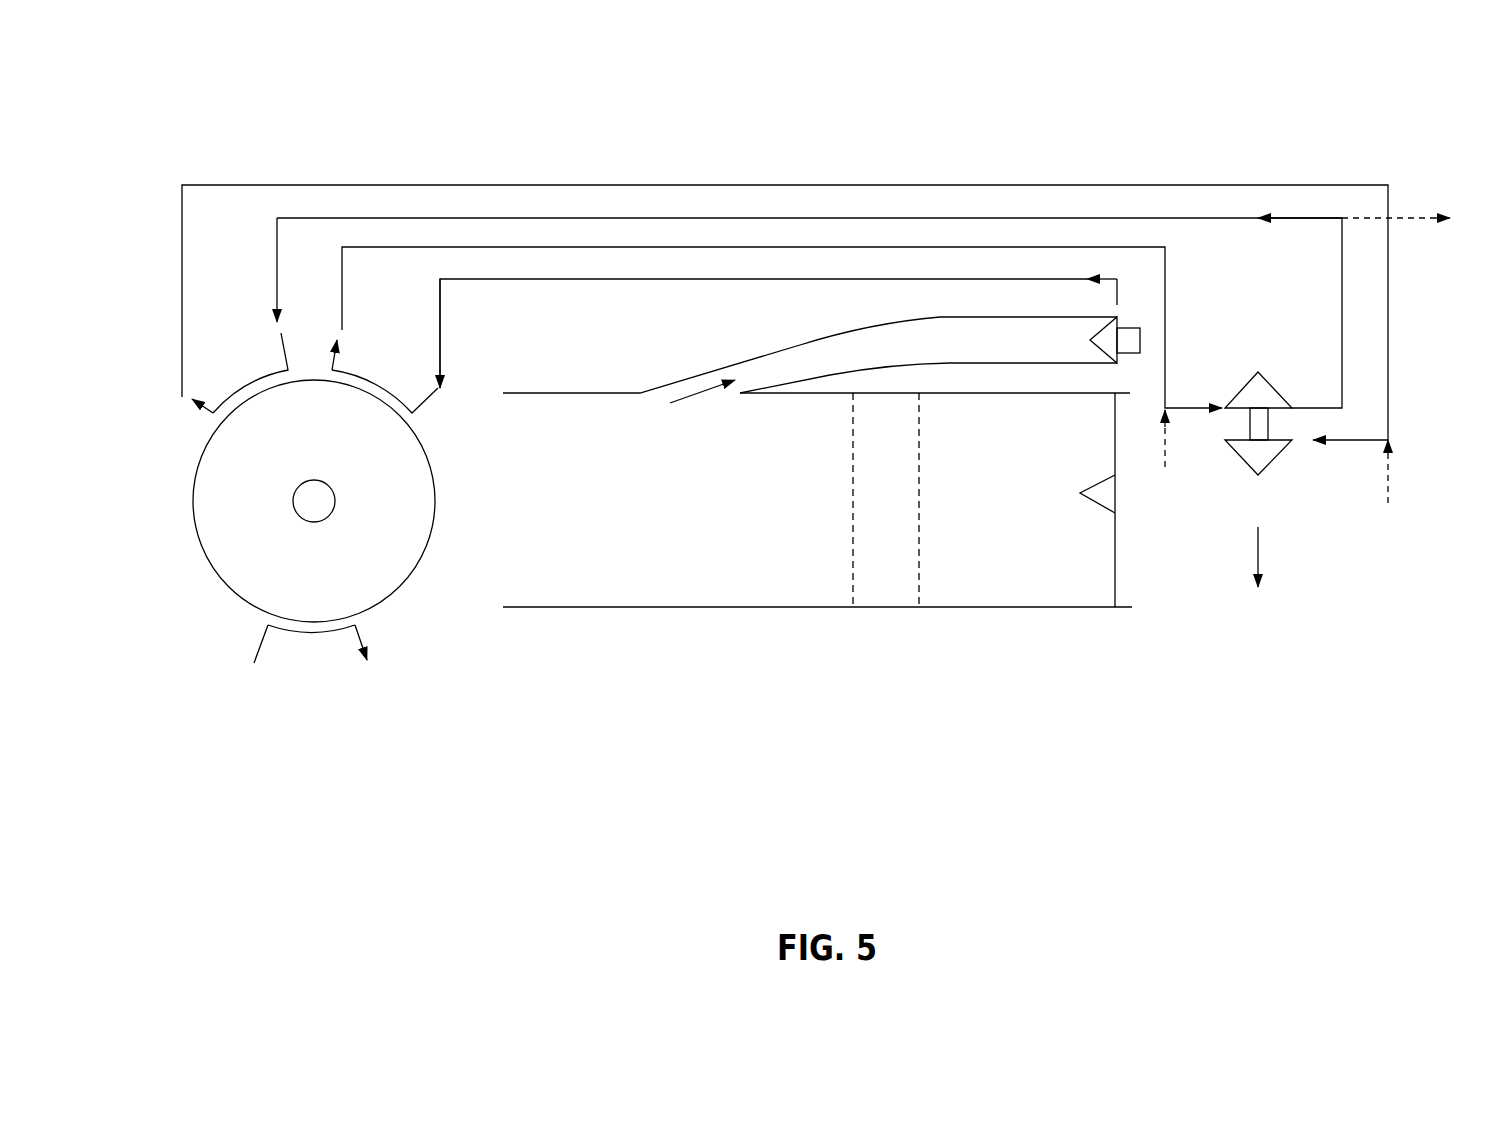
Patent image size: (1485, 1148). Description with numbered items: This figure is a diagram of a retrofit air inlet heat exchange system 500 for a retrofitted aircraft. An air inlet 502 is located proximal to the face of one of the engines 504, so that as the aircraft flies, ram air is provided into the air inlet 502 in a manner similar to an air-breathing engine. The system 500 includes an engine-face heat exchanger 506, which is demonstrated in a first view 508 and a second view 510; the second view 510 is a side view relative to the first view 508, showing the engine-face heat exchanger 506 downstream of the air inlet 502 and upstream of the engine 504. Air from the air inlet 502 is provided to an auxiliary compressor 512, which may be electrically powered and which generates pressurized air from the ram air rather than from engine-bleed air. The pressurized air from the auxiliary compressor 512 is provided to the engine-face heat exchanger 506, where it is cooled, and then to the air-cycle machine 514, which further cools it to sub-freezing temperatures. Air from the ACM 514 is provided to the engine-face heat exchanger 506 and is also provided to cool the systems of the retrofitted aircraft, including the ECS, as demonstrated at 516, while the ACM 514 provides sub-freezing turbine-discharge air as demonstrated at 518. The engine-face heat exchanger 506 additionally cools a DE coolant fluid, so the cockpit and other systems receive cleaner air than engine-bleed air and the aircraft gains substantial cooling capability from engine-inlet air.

The retrofit air inlet heat exchange system 500 is at (287, 85).
The air inlet 502 is at (670, 420).
The engine 504 is at (1065, 480).
The engine-face heat exchanger 506 is at (201, 453).
The first view 508 is at (432, 625).
The second view 510 is at (888, 667).
The auxiliary compressor 512 is at (1108, 330).
The air-cycle machine (ACM) 514 is at (1292, 382).
The air provided to cool the systems of the retrofitted aircraft 516 is at (1412, 192).
The sub-freezing turbine-discharge air 518 is at (1275, 608).